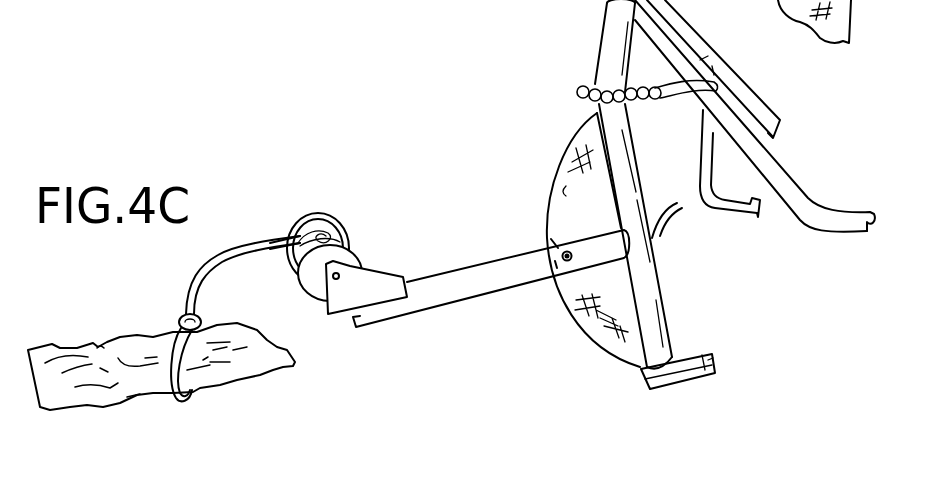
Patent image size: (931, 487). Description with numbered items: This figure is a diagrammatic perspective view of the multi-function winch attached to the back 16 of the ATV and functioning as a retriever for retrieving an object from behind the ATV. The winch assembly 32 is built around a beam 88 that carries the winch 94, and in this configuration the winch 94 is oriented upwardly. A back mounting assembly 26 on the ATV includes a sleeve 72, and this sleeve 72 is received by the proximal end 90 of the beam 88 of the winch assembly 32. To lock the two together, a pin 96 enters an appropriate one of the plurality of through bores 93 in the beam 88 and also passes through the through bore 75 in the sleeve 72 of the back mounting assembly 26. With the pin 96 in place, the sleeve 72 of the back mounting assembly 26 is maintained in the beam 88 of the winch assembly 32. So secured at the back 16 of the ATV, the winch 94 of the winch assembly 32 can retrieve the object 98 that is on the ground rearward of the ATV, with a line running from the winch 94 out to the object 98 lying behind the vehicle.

The back of the ATV 16 is at (522, 163).
The back mounting assembly 26 is at (676, 271).
The winch assembly 32 is at (406, 252).
The sleeve 72 is at (543, 235).
The through bore 75 is at (567, 261).
The beam 88 is at (451, 260).
The proximal end 90 is at (621, 230).
The through bores 93 is at (526, 315).
The winch 94 is at (315, 207).
The pin 96 is at (526, 315).
The object 98 is at (87, 368).